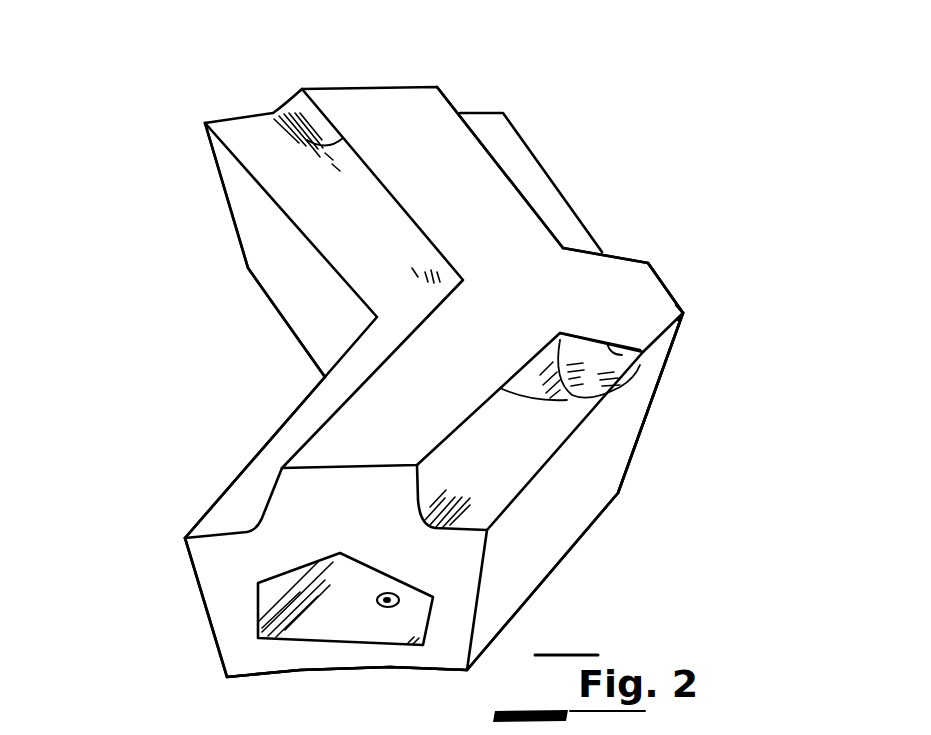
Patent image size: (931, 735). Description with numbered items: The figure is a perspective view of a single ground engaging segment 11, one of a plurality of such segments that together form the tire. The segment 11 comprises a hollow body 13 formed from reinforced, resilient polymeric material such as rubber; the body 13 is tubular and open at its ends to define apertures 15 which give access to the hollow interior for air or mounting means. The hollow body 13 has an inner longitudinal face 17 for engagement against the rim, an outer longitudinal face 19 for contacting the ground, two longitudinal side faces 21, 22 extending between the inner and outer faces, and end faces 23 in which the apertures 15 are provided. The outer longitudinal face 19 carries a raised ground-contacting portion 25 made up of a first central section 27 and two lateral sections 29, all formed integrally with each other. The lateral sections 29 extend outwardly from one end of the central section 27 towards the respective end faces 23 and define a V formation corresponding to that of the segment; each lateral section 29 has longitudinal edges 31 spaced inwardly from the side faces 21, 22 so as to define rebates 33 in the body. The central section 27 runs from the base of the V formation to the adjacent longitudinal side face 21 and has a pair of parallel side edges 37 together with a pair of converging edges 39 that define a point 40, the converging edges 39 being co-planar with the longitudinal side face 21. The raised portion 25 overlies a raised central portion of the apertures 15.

The ground engaging segment 11 is at (188, 255).
The hollow body 13 is at (560, 527).
The aperture 15 is at (338, 630).
The inner longitudinal face 17 is at (287, 677).
The outer longitudinal face 19 is at (478, 167).
The longitudinal side face 21 is at (613, 460).
The longitudinal side face 22 is at (310, 323).
The end face 23 is at (220, 588).
The raised ground-contacting portion 25 is at (527, 237).
The central section 27 is at (632, 302).
The lateral section 29 is at (408, 133).
The longitudinal edge 31 is at (270, 113).
The rebate 33 is at (530, 180).
The parallel side edge 37 is at (632, 255).
The converging edge 39 is at (657, 270).
The point 40 is at (685, 313).